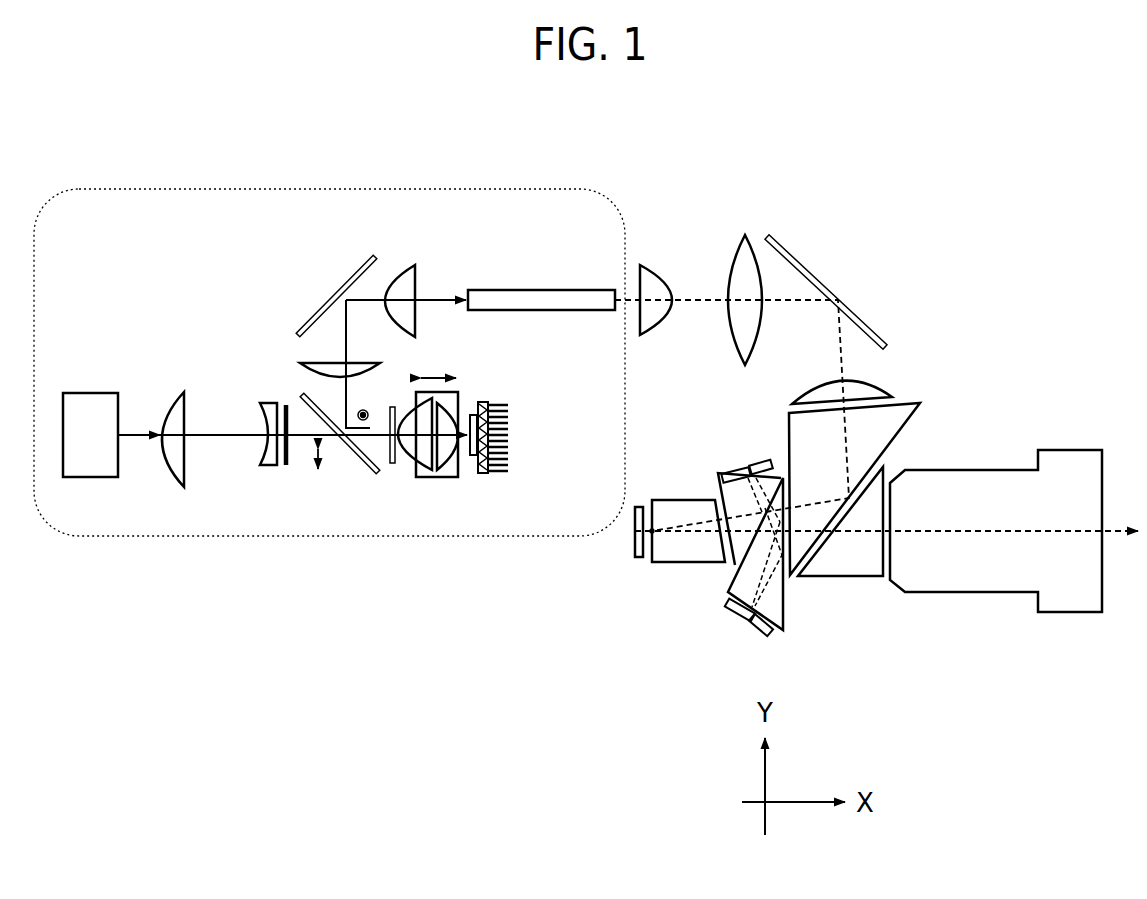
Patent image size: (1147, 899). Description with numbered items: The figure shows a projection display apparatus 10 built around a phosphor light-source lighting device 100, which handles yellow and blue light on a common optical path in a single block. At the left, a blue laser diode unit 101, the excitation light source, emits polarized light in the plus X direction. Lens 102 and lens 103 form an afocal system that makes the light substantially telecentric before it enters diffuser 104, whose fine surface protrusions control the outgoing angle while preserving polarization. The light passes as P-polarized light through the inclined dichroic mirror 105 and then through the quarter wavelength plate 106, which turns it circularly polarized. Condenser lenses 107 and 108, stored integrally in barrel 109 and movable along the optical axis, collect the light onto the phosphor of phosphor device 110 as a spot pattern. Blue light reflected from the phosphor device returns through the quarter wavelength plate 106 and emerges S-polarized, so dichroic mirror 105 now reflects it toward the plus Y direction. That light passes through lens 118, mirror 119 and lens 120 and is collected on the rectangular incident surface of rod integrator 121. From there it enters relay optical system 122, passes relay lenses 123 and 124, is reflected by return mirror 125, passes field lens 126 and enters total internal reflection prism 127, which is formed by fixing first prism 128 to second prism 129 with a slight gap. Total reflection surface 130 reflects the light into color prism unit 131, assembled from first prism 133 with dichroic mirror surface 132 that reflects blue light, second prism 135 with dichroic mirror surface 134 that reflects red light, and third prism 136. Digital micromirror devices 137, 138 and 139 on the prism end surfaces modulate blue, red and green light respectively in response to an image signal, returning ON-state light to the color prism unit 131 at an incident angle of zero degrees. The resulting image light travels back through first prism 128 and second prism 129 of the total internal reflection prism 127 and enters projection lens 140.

The projection display apparatus 10 is at (1058, 277).
The phosphor light-source lighting device 100 is at (562, 210).
The blue laser diode unit 101 is at (90, 393).
The lens 102 is at (182, 391).
The lens 103 is at (262, 402).
The diffuser 104 is at (285, 468).
The dichroic mirror 105 is at (370, 476).
The λ/4 plate 106 is at (392, 466).
The condenser lens 107 is at (409, 479).
The condenser lens 108 is at (457, 479).
The barrel 109 is at (431, 479).
The phosphor device 110 is at (512, 403).
The lens 118 is at (300, 365).
The mirror 119 is at (353, 276).
The lens 120 is at (402, 268).
The rod integrator 121 is at (515, 289).
The relay optical system 122 is at (701, 258).
The relay lens 123 is at (644, 265).
The relay lens 124 is at (733, 281).
The return mirror 125 is at (800, 262).
The field lens 126 is at (888, 398).
The total internal reflection prism 127 is at (902, 445).
The first prism 128 is at (853, 578).
The second prism 129 is at (915, 404).
The total reflection surface 130 is at (915, 413).
The color prism unit 131 is at (641, 560).
The dichroic mirror surface 132 is at (733, 568).
The first prism 133 is at (775, 600).
The dichroic mirror surface 134 is at (675, 564).
The second prism 135 is at (722, 470).
The third prism 136 is at (678, 500).
The digital micromirror device 137 is at (753, 618).
The digital micromirror device 138 is at (745, 462).
The digital micromirror device 139 is at (641, 505).
The projection lens 140 is at (983, 562).